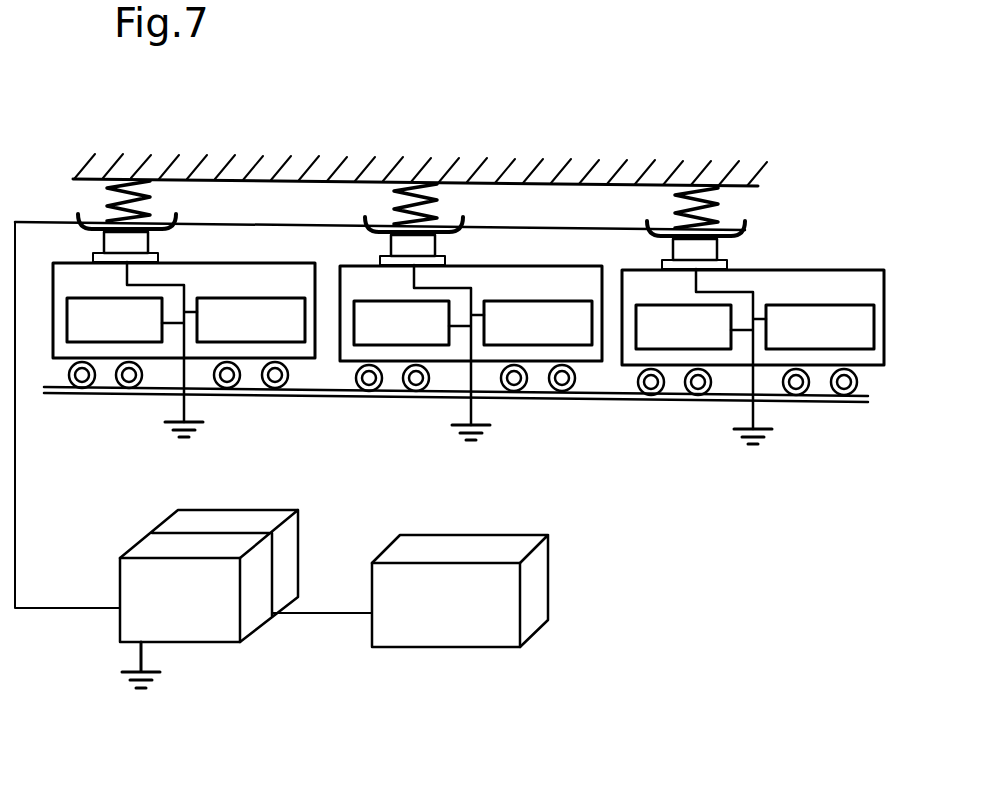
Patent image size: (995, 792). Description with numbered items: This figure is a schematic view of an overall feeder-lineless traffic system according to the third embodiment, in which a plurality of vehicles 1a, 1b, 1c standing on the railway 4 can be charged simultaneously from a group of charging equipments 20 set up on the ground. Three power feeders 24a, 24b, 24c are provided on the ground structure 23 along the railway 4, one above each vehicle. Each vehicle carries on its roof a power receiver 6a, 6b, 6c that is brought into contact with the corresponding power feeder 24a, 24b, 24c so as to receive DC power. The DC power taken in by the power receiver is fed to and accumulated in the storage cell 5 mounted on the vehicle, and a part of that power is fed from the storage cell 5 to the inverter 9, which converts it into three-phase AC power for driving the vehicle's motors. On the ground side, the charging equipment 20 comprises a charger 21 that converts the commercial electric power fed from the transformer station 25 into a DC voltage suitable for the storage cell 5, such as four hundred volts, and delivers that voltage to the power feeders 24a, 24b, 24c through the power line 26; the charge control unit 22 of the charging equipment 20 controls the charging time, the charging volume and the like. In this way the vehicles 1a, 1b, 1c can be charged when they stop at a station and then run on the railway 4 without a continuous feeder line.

The vehicle 1a is at (282, 262).
The vehicle 1b is at (562, 265).
The vehicle 1c is at (825, 269).
The railway 4 is at (608, 404).
The storage cell 5 is at (101, 297).
The power receiver 6a is at (149, 247).
The power receiver 6b is at (438, 250).
The power receiver 6c is at (718, 254).
The inverter 9 is at (243, 298).
The charging equipment 20 is at (334, 593).
The charger 21 is at (196, 593).
The charge control unit 22 is at (265, 508).
The ground structure 23 is at (340, 170).
The power feeder 24a is at (152, 207).
The power feeder 24b is at (437, 210).
The power feeder 24c is at (722, 214).
The transformer station 25 is at (467, 597).
The power line 26 is at (15, 465).